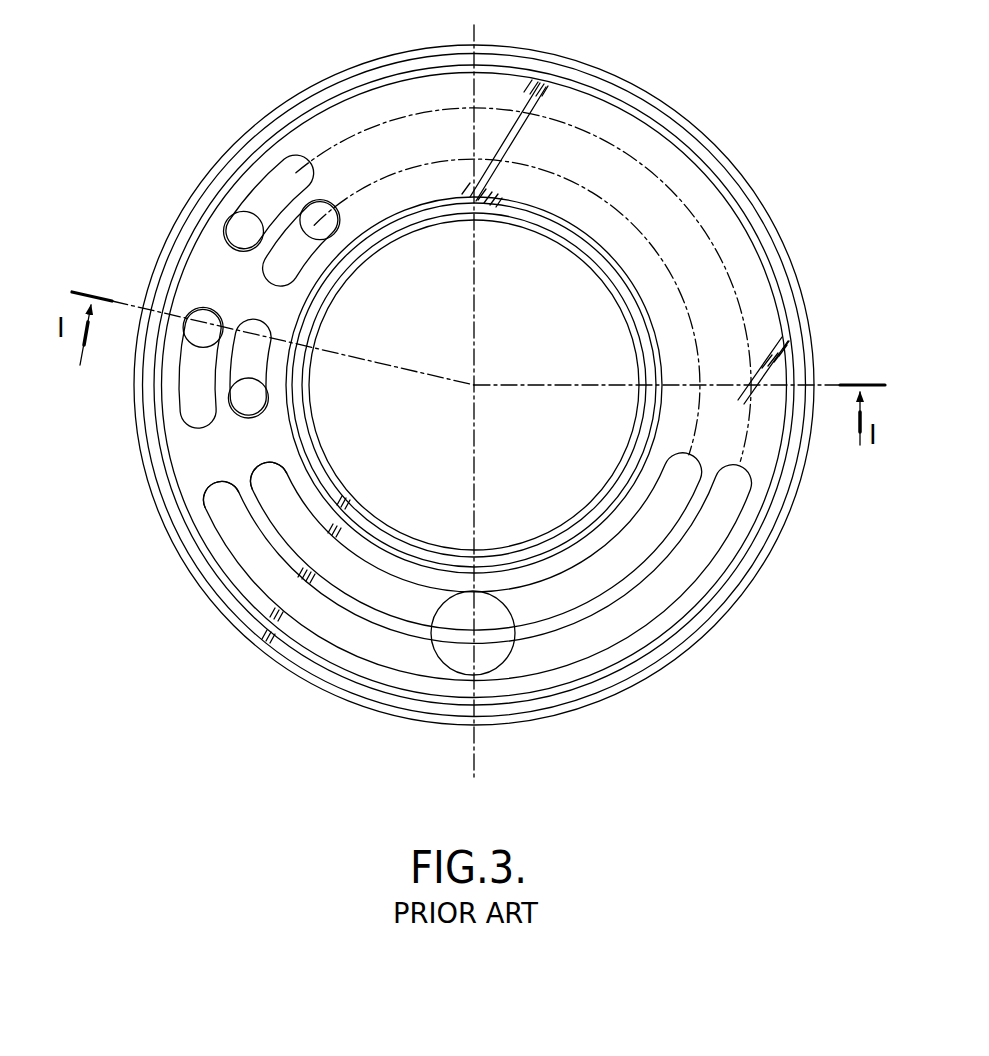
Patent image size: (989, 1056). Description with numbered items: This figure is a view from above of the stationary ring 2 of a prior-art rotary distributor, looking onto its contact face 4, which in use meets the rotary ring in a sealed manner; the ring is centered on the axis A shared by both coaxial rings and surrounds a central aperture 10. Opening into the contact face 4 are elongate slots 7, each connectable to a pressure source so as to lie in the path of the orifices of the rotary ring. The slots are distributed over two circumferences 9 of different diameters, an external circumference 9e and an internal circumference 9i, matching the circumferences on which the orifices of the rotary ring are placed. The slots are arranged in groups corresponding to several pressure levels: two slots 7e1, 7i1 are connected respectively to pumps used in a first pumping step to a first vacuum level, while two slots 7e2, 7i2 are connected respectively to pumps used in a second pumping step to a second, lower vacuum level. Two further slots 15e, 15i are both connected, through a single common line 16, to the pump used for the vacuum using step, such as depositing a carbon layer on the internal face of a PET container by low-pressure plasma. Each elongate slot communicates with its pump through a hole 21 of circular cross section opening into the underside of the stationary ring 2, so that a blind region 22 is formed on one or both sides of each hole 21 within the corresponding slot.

The stationary ring 2 is at (650, 77).
The contact face 4 is at (680, 183).
The slot 7 is at (231, 267).
The slot 7e1 is at (285, 168).
The slot 7e2 is at (187, 408).
The slot 7i1 is at (295, 258).
The slot 7i2 is at (258, 365).
The circumferences 9 is at (477, 614).
The external circumference 9e is at (305, 604).
The internal circumference 9i is at (387, 596).
The central aperture 10 is at (527, 495).
The slot 15e is at (252, 562).
The slot 15i is at (268, 500).
The common line 16 is at (486, 670).
The hole 21 is at (331, 206).
The blind region 22 is at (328, 200).
The axis A is at (476, 387).